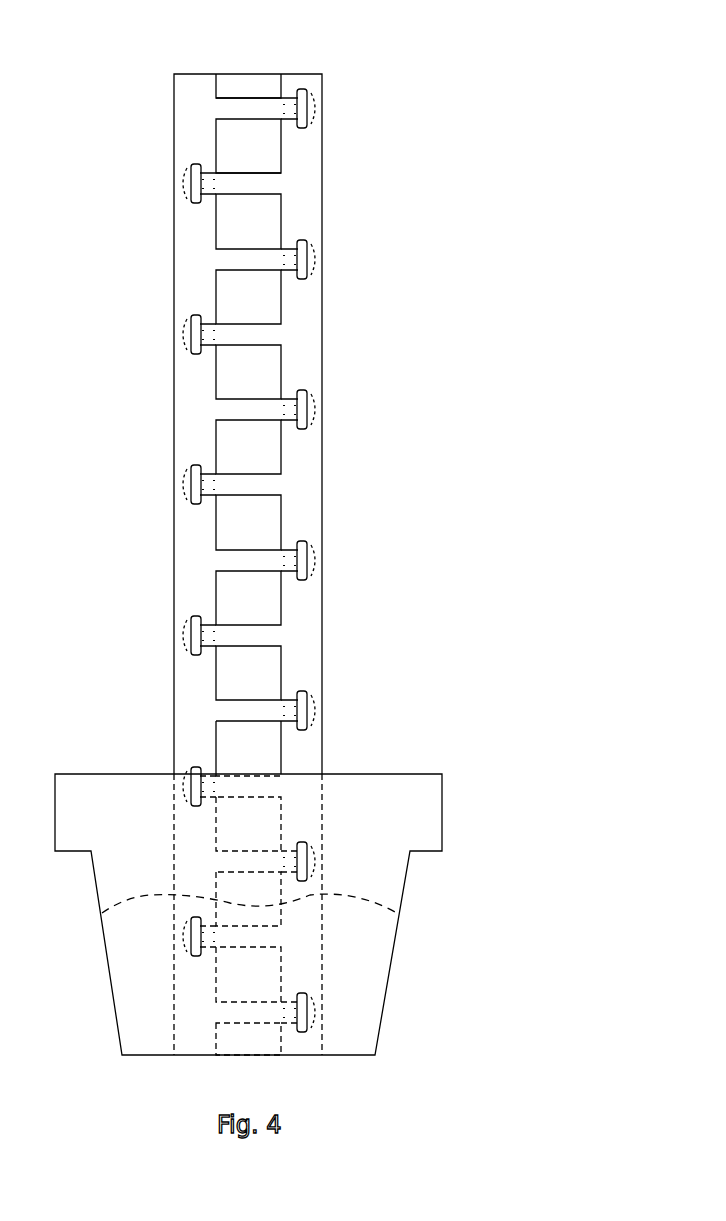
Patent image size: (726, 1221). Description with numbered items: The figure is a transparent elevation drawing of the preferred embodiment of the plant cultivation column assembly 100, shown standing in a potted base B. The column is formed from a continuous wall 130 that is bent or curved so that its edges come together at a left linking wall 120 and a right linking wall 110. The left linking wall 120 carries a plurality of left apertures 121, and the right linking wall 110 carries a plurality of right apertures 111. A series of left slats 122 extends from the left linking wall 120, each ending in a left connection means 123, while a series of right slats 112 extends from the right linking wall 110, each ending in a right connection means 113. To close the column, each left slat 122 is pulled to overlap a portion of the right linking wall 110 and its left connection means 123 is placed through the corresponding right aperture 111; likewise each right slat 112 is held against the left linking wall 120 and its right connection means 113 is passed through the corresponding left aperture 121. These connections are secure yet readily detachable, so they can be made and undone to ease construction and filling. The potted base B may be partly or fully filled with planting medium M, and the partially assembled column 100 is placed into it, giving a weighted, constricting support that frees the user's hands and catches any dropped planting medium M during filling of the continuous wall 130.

The plant cultivation column assembly 100 is at (321, 564).
The right linking wall 110 is at (308, 218).
The right aperture 111 is at (353, 83).
The right slat 112 is at (247, 178).
The right connection means 113 is at (183, 183).
The left linking wall 120 is at (235, 529).
The left aperture 121 is at (150, 155).
The left slat 122 is at (255, 100).
The left connection means 123 is at (313, 102).
The continuous wall 130 is at (268, 304).
The potted base B is at (397, 834).
The planting medium M is at (357, 958).